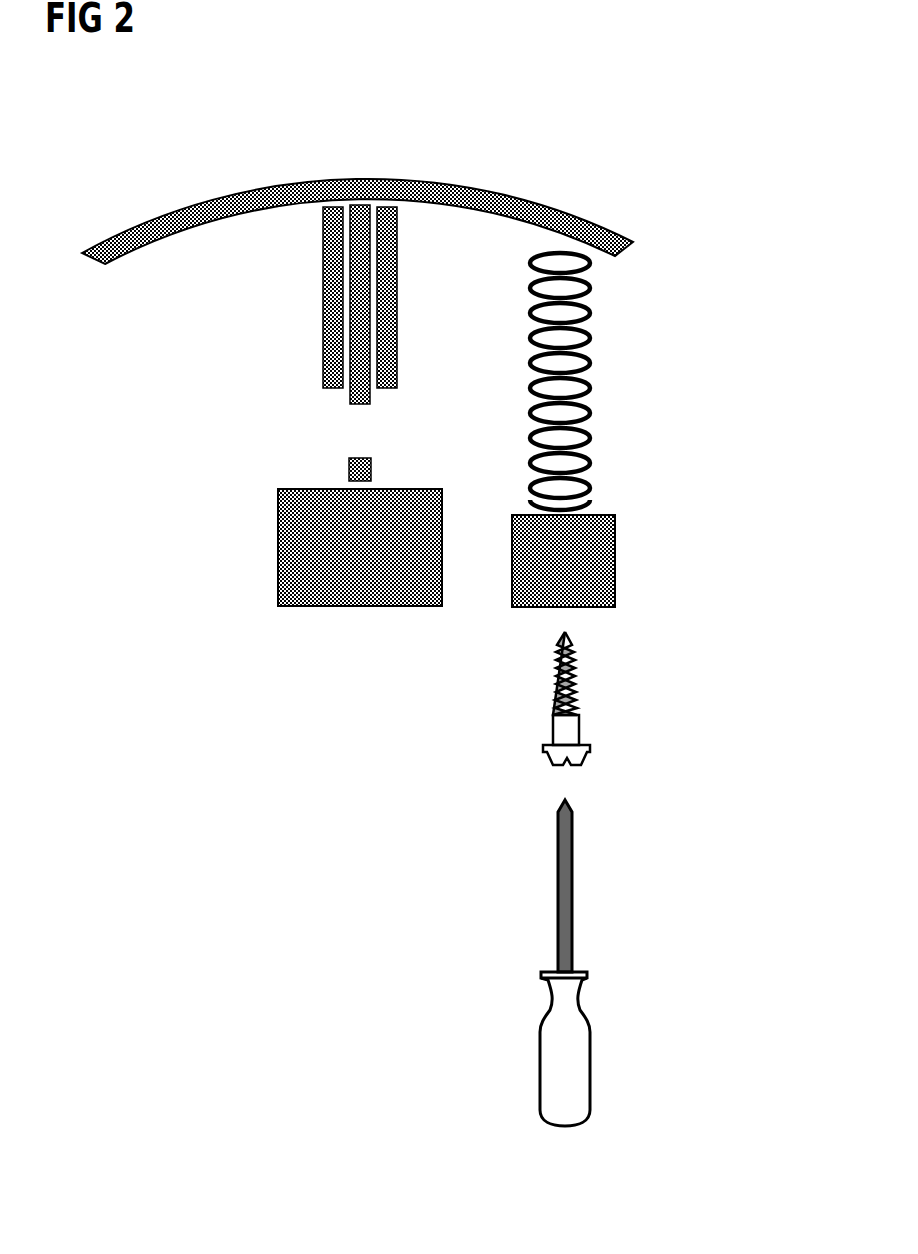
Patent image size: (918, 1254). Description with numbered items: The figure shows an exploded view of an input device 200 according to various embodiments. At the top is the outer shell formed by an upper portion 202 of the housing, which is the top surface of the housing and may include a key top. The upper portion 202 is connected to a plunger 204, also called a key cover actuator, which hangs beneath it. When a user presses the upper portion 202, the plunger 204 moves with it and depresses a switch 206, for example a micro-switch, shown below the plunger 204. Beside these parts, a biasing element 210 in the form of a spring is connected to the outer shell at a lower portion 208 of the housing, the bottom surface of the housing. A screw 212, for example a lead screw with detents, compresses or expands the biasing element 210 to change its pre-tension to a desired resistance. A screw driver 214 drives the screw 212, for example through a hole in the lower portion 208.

The input device 200 is at (702, 77).
The upper portion of the housing 202 is at (230, 192).
The plunger 204 is at (400, 357).
The switch 206 is at (400, 488).
The lower portion of the housing 208 is at (512, 607).
The biasing element 210 is at (594, 398).
The screw 212 is at (578, 710).
The screw driver 214 is at (572, 898).